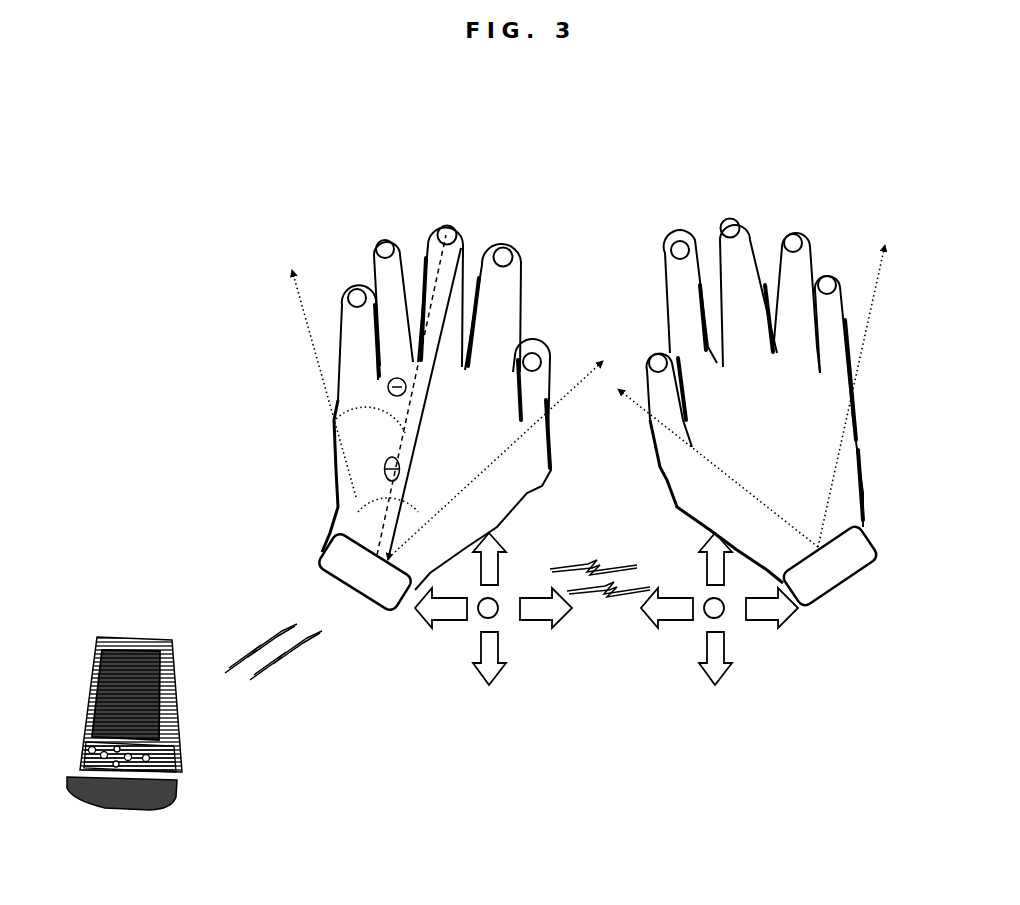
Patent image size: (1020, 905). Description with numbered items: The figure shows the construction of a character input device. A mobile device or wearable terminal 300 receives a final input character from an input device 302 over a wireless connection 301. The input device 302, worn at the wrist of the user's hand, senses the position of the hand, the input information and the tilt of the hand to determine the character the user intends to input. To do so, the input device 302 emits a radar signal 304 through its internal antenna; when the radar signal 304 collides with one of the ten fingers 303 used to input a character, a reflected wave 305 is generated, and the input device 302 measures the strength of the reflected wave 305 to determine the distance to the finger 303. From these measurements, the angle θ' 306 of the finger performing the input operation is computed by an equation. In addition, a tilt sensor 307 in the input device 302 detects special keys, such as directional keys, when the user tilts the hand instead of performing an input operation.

The mobile device or wearable terminal 300 is at (115, 632).
The wireless connection 301 is at (247, 642).
The input device 302 is at (380, 607).
The finger 303 is at (525, 299).
The radar signal 304 is at (438, 300).
The reflected wave 305 is at (424, 405).
The angle θ' of the finger 306 is at (395, 372).
The tilt sensor 307 is at (500, 620).